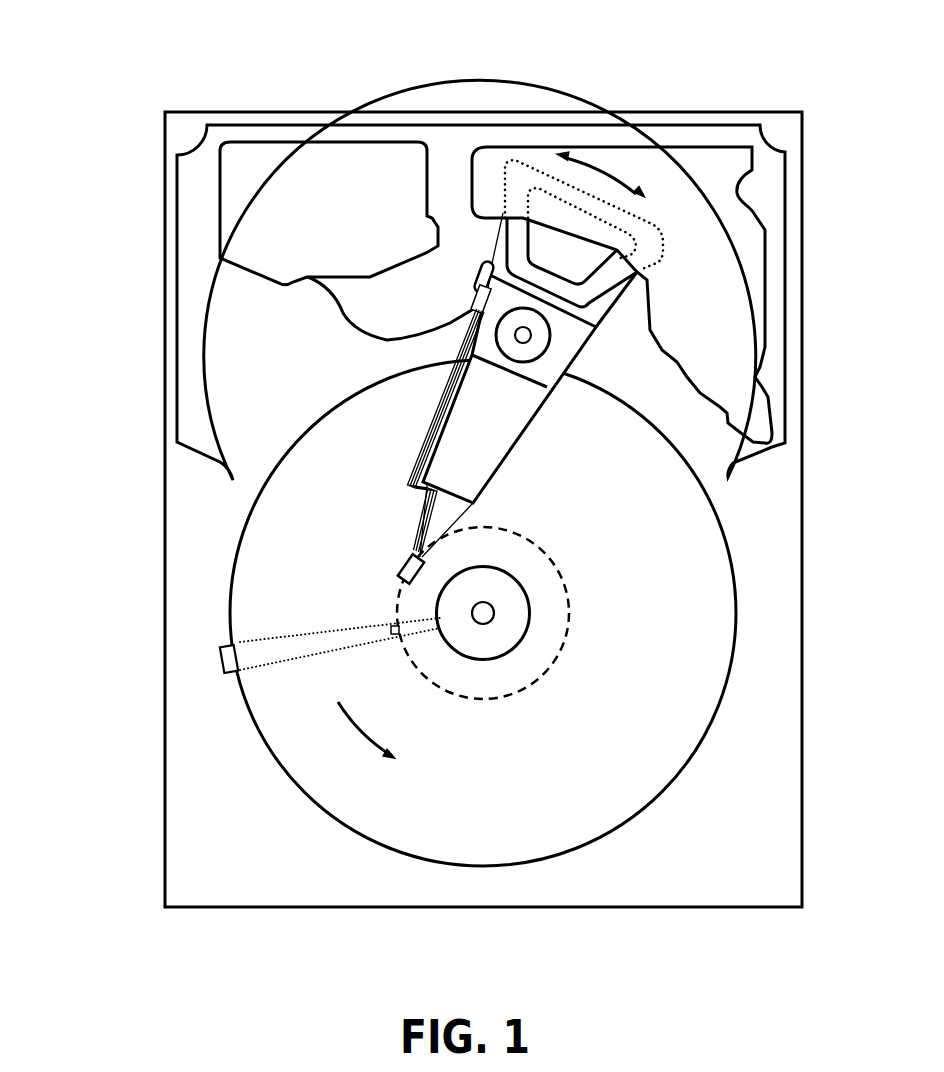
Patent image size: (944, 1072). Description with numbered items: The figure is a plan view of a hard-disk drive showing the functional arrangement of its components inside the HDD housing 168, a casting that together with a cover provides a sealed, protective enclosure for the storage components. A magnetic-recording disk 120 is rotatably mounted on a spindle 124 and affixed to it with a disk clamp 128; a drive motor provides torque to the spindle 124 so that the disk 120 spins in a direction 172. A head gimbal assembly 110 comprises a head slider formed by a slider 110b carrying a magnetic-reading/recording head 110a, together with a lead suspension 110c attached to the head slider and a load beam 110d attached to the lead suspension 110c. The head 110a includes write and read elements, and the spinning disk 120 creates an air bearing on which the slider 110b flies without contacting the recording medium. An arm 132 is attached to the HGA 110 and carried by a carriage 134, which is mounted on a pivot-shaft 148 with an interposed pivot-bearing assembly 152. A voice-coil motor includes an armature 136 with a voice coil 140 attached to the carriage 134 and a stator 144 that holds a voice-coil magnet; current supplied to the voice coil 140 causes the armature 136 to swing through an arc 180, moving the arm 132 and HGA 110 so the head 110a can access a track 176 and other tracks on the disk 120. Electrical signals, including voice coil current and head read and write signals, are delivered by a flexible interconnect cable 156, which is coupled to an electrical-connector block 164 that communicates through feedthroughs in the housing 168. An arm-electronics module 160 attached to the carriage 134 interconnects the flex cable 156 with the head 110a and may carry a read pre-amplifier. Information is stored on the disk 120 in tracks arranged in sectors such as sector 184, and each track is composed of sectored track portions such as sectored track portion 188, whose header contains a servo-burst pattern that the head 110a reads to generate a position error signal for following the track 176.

The head gimbal assembly 110 is at (257, 446).
The magnetic-reading/recording head 110a is at (400, 577).
The slider 110b is at (410, 553).
The lead suspension 110c is at (420, 520).
The load beam 110d is at (418, 487).
The magnetic-recording disk 120 is at (663, 567).
The spindle 124 is at (490, 611).
The disk clamp 128 is at (508, 628).
The arm 132 is at (477, 450).
The carriage 134 is at (541, 369).
The armature 136 is at (499, 268).
The voice coil 140 is at (518, 230).
The stator 144 is at (732, 238).
The pivot-shaft 148 is at (533, 334).
The pivot-bearing assembly 152 is at (535, 347).
The flexible interconnect cable 156 is at (343, 310).
The arm-electronics module 160 is at (472, 300).
The electrical-connector block 164 is at (243, 210).
The HDD housing 168 is at (783, 125).
The direction 172 is at (370, 738).
The track 176 is at (560, 573).
The arc 180 is at (601, 170).
The sector 184 is at (218, 660).
The sectored track portion 188 is at (390, 630).